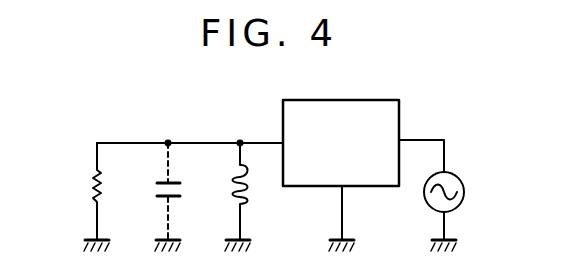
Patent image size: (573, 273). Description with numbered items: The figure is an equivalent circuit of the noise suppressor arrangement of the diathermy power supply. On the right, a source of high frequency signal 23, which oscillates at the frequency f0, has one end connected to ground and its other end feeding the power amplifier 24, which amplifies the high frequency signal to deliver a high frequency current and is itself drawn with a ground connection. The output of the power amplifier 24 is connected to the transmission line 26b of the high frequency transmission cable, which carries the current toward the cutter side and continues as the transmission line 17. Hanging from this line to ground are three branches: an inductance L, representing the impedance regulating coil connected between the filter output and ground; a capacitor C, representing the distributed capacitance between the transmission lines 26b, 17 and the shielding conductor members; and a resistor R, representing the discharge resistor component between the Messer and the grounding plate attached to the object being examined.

The transmission line 17 is at (118, 141).
The transmission line of the high frequency transmission cable 26b is at (201, 141).
The power amplifier 24 is at (370, 106).
The source of high frequency signal 23 is at (453, 182).
The resistor R is at (90, 189).
The capacitor C is at (181, 187).
The inductance L is at (248, 186).